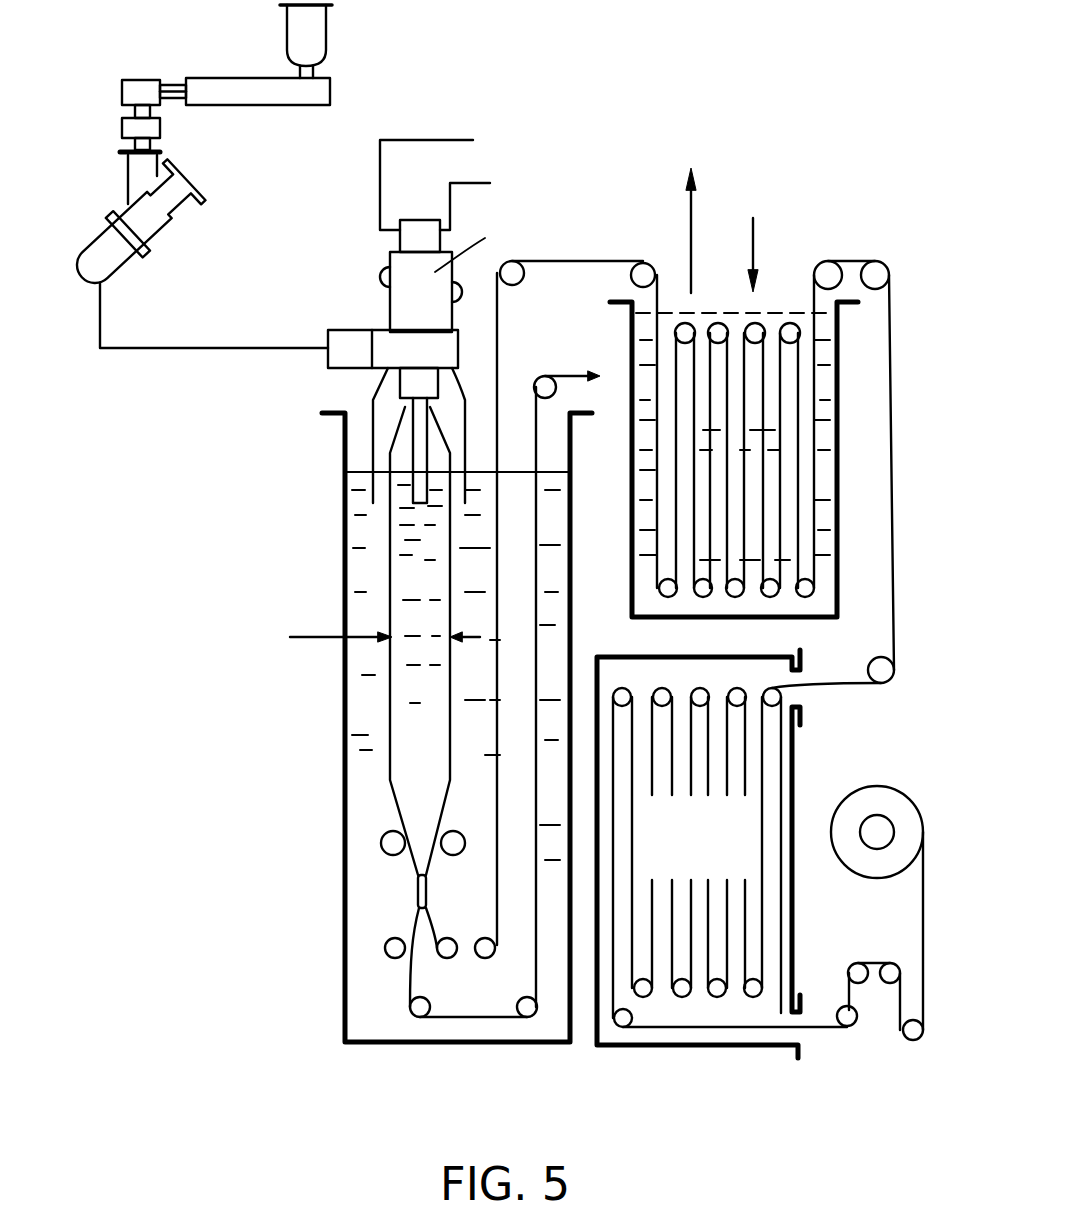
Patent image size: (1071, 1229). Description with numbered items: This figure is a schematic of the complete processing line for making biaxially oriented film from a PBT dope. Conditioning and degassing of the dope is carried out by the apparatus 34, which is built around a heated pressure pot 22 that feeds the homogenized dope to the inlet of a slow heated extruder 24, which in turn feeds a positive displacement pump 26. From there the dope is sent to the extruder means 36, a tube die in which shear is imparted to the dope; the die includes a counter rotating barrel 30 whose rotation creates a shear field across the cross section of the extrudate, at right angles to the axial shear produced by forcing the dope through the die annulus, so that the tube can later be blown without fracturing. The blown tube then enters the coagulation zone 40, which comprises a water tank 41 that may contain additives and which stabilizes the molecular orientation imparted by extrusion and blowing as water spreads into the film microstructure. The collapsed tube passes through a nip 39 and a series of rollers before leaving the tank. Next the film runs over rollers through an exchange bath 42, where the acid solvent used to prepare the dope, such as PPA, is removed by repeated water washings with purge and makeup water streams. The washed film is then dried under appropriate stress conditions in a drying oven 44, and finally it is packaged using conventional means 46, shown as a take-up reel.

The heated pressure pot 22 is at (312, 42).
The slow heated extruder 24 is at (230, 86).
The positive displacement pump 26 is at (143, 92).
The counter rotating barrel 30 is at (420, 496).
The apparatus 34 is at (233, 214).
The extruder means 36 is at (390, 345).
The pinch roller nip 39 is at (413, 895).
The coagulation zone 40 is at (392, 690).
The water tank 41 is at (378, 1044).
The exchange bath 42 is at (840, 430).
The drying oven 44 is at (793, 758).
The conventional means 46 is at (912, 803).